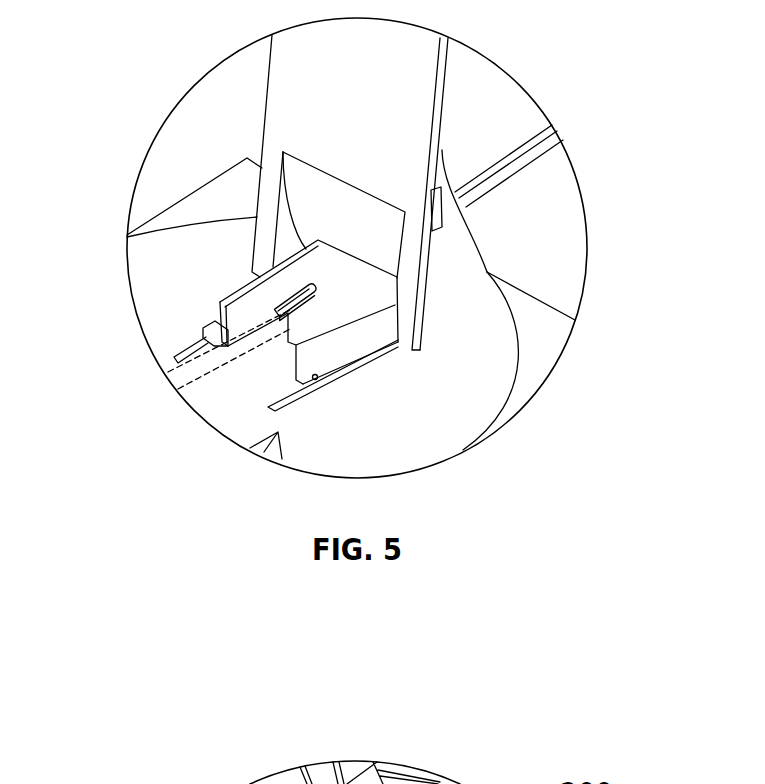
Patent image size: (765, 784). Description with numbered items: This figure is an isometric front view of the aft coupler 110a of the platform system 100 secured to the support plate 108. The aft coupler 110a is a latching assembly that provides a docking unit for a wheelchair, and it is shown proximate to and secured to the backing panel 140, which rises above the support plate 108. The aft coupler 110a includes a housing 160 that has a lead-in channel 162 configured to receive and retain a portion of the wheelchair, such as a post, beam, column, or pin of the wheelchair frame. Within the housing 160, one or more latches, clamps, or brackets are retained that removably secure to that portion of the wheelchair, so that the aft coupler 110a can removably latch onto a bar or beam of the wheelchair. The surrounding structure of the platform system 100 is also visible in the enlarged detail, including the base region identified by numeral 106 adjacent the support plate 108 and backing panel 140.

The platform system 100 is at (183, 62).
The backing panel 140 is at (447, 92).
The base rail 106 is at (542, 328).
The support plate 108 is at (480, 373).
The housing 160 is at (340, 335).
The lead-in channel 162 is at (190, 352).
The aft coupler 110a is at (233, 293).